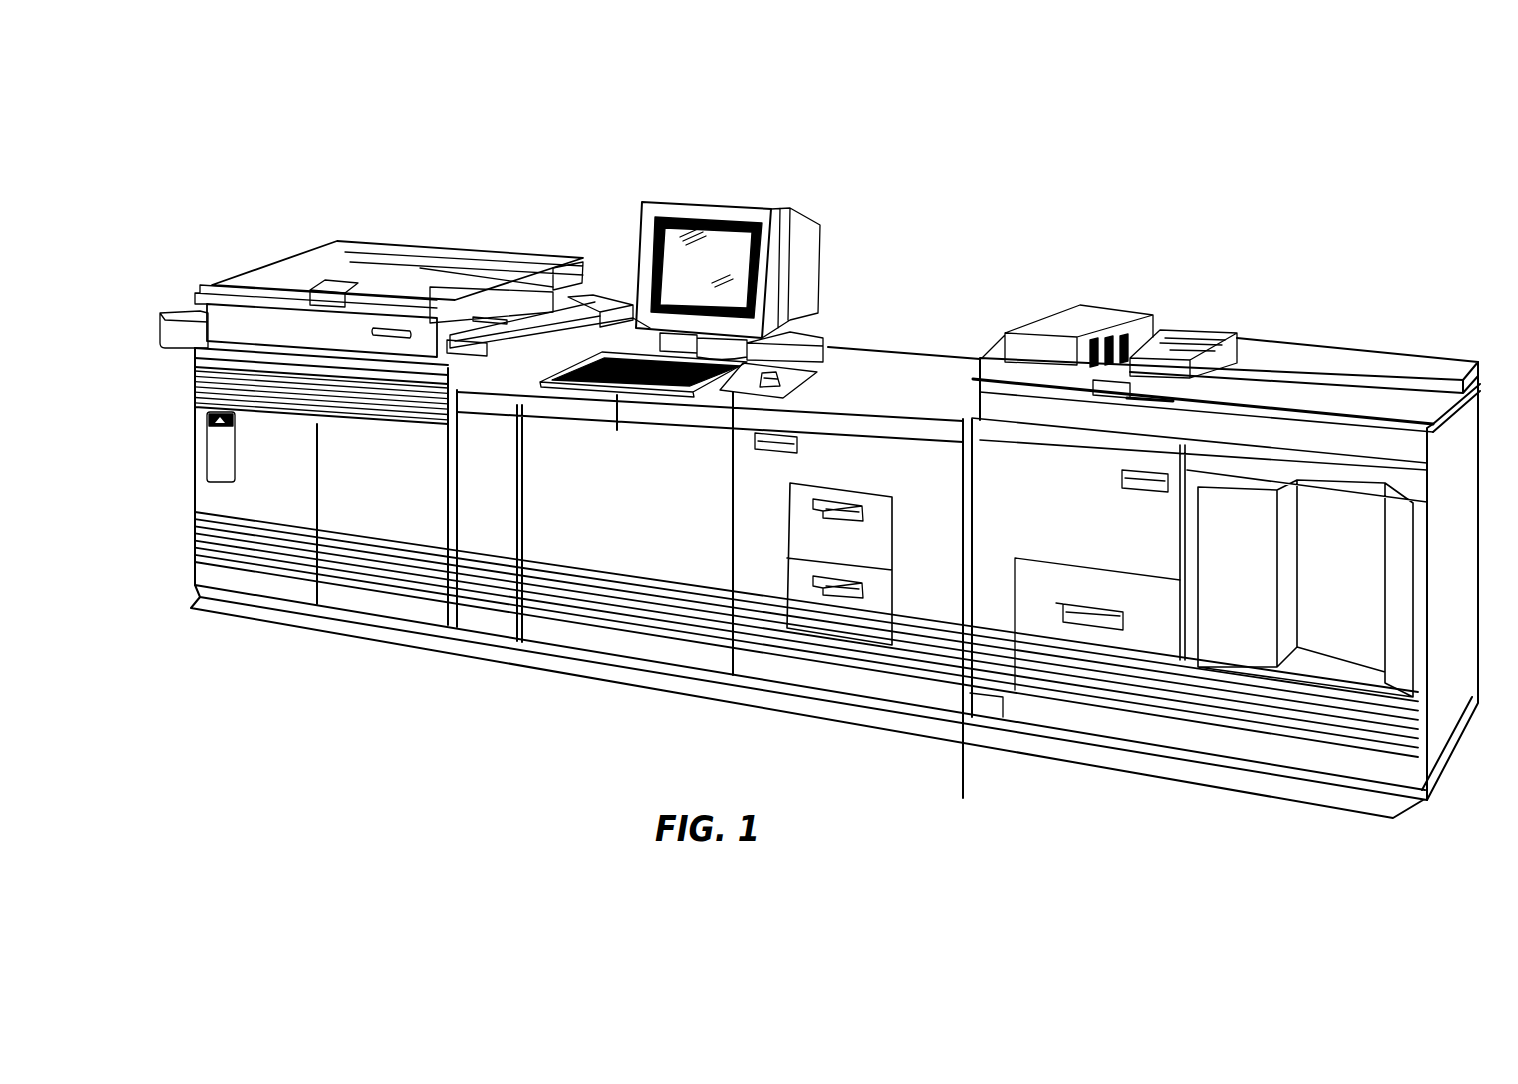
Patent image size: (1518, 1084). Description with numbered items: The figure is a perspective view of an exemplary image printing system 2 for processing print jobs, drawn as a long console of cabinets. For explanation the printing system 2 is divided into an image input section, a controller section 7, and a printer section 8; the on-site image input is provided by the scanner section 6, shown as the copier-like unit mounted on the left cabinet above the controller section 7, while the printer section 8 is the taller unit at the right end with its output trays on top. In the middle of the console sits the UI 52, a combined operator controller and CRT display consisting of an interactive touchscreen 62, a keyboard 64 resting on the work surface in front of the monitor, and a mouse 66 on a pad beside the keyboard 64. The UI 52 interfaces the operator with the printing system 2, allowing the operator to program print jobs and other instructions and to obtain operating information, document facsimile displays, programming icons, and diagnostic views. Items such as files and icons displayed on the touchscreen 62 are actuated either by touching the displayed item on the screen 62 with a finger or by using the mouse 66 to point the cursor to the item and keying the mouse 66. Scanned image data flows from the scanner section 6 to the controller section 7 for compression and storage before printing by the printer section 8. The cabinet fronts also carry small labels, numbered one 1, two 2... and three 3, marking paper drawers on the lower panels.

The image printing system 2 is at (965, 92).
The scanner section 6 is at (443, 218).
The controller section 7 is at (178, 490).
The printer section 8 is at (935, 272).
The UI 52 is at (712, 251).
The interactive touchscreen 62 is at (673, 273).
The keyboard 64 is at (623, 393).
The mouse 66 is at (722, 392).
The paper tray 1 is at (839, 564).
The paper tray 3 is at (1097, 624).